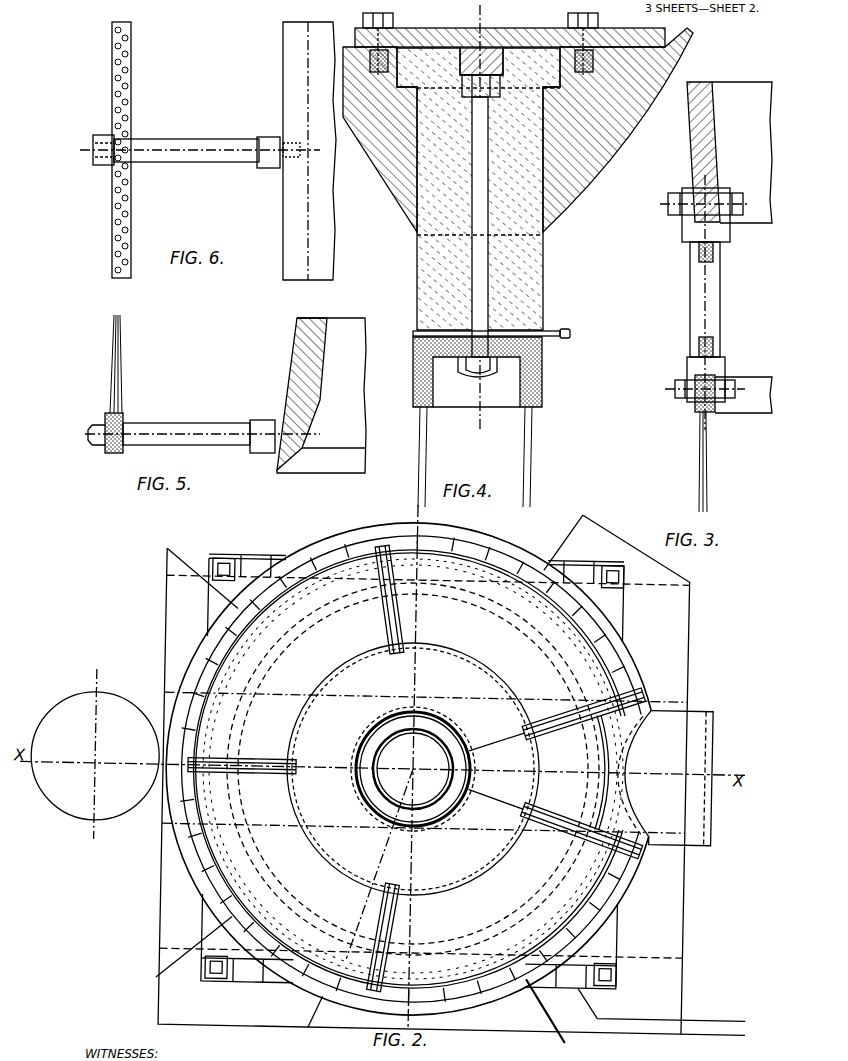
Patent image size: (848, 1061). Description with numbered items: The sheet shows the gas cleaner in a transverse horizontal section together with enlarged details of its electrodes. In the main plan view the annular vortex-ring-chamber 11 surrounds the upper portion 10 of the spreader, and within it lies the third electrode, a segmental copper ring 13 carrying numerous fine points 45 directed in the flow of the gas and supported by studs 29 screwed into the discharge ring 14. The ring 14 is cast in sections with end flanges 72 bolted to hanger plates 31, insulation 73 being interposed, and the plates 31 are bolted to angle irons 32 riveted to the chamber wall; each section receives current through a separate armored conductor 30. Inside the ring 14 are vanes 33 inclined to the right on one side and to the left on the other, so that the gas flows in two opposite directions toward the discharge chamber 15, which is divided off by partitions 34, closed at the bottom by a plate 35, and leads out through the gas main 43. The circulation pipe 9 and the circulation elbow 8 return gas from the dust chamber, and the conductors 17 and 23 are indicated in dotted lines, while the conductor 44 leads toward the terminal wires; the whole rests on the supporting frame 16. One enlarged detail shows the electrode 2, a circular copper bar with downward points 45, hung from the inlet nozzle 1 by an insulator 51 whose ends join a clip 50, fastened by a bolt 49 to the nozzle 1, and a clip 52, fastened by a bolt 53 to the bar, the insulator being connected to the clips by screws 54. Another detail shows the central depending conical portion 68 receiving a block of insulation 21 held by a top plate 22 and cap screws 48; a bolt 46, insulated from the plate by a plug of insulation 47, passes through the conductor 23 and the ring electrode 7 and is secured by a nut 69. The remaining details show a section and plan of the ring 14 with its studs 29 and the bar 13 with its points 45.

In FIG. 3, the nozzle 1 is at (686, 128).
In FIG. 2, the nozzle 1 is at (383, 742).
In FIG. 3, the electrode 2 is at (693, 408).
In FIG. 4, the electrode ring 7 is at (542, 372).
In FIG. 2, the circulation elbow 8 is at (350, 700).
In FIG. 2, the circulation pipe 9 is at (95, 754).
In FIG. 2, the upper portion of spreader 10 is at (375, 790).
In FIG. 2, the vortex-ring-chamber 11 is at (312, 543).
In FIG. 6, the segmental copper ring electrode 13 is at (135, 38).
In FIG. 5, the segmental copper ring electrode 13 is at (125, 412).
In FIG. 2, the segmental copper ring electrode 13 is at (205, 663).
In FIG. 6, the discharge ring 14 is at (282, 213).
In FIG. 5, the discharge ring 14 is at (285, 366).
In FIG. 2, the discharge ring 14 is at (462, 662).
In FIG. 2, the discharge chamber 15 is at (503, 775).
In FIG. 2, the supporting frame 16 is at (624, 582).
In FIG. 2, the armored conductor 17 is at (415, 862).
In FIG. 4, the block of insulation 21 is at (412, 262).
In FIG. 4, the top plate 22 is at (450, 25).
In FIG. 4, the conductor 23 is at (547, 330).
In FIG. 2, the conductor 23 is at (385, 851).
In FIG. 6, the studs 29 is at (186, 139).
In FIG. 5, the studs 29 is at (190, 424).
In FIG. 2, the studs 29 is at (165, 697).
In FIG. 2, the conductors 30 is at (190, 582).
In FIG. 2, the hanger plates 31 is at (385, 538).
In FIG. 2, the angle irons 32 is at (377, 530).
In FIG. 2, the vanes 33 is at (472, 582).
In FIG. 2, the partitions 34 is at (555, 772).
In FIG. 2, the plate 35 is at (417, 768).
In FIG. 2, the gas main 43 is at (665, 778).
In FIG. 2, the conductor 44 is at (648, 1006).
In FIG. 6, the fine points 45 is at (126, 217).
In FIG. 5, the fine points 45 is at (122, 338).
In FIG. 4, the fine points 45 is at (522, 455).
In FIG. 3, the fine points 45 is at (696, 467).
In FIG. 4, the bolt 46 is at (480, 380).
In FIG. 4, the plug of insulation 47 is at (510, 28).
In FIG. 4, the cap screws 48 is at (600, 27).
In FIG. 3, the bolt 49 is at (676, 193).
In FIG. 3, the clip 50 is at (681, 229).
In FIG. 3, the insulators 51 is at (689, 294).
In FIG. 3, the clip 52 is at (686, 367).
In FIG. 3, the bolt 53 is at (673, 390).
In FIG. 3, the screws 54 is at (714, 255).
In FIG. 4, the central depending conical portion 68 is at (580, 177).
In FIG. 4, the nut 69 is at (460, 375).
In FIG. 2, the end flanges 72 is at (295, 760).
In FIG. 2, the insulation 73 is at (296, 764).